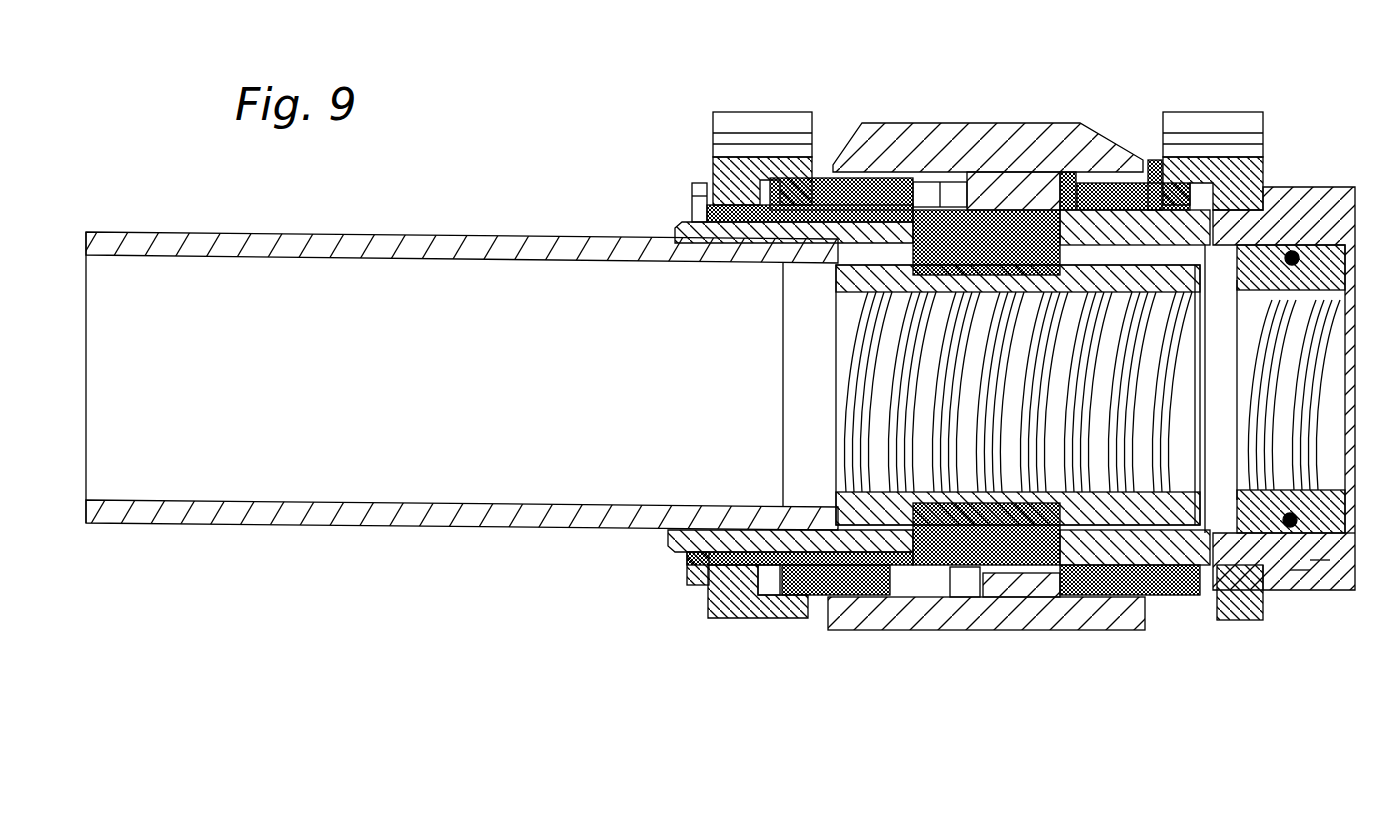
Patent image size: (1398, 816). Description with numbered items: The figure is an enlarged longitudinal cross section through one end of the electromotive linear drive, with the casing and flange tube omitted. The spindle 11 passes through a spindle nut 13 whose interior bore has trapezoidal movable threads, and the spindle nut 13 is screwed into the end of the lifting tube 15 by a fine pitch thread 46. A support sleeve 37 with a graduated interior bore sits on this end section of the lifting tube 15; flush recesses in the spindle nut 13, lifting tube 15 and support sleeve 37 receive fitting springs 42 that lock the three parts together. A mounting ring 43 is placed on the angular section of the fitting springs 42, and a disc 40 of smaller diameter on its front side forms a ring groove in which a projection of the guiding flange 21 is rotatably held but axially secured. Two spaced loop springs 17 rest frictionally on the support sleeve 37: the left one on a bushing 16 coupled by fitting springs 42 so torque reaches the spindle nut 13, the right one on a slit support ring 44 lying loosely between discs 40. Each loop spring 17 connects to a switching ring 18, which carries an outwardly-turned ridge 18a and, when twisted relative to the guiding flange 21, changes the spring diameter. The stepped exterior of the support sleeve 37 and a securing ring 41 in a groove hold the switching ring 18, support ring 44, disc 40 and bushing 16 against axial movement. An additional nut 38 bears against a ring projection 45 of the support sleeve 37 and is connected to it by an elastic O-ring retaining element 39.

The spindle 11 is at (850, 405).
The spindle nut 13 is at (1195, 262).
The lifting tube 15 is at (335, 512).
The bushing 16 is at (735, 618).
The loop spring 17 is at (840, 165).
The switching ring 18 is at (715, 165).
The outwardly-turned ridge 18a is at (740, 125).
The guiding flange 21 is at (855, 628).
The support sleeve 37 is at (1318, 590).
The additional nut 38 is at (1330, 590).
The retaining element 39 is at (1305, 590).
The disc 40 is at (1065, 185).
The securing ring 41 is at (682, 565).
The fitting spring 42 is at (935, 590).
The mounting ring 43 is at (975, 175).
The support ring 44 is at (1105, 580).
The ring projection 45 is at (1290, 590).
The thread 46 is at (1268, 182).